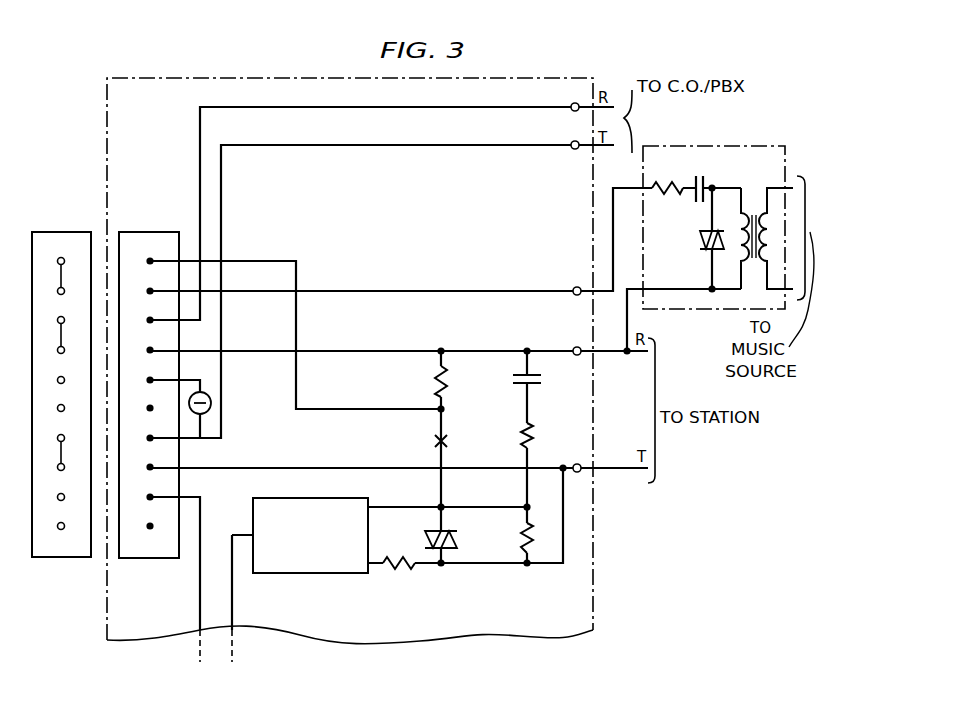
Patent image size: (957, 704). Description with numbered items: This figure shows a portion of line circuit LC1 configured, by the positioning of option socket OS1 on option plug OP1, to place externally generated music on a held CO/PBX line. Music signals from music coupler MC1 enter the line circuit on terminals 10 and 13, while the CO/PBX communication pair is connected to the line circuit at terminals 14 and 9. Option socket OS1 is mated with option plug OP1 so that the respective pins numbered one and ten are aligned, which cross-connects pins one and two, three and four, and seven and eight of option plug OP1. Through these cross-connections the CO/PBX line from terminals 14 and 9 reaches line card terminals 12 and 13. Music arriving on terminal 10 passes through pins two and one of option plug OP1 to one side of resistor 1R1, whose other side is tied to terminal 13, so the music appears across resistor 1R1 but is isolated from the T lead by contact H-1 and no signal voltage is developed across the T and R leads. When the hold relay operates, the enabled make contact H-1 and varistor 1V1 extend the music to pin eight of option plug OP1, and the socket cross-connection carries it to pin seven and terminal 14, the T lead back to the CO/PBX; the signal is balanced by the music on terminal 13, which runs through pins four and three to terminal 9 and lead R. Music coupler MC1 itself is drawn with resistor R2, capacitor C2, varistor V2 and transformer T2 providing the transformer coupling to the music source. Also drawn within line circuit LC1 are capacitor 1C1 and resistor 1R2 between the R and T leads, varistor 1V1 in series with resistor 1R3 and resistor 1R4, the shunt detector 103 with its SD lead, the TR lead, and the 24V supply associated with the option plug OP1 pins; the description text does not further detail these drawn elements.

The shunt detector 103 is at (340, 575).
The terminal 9 is at (573, 98).
The terminal 14 is at (574, 136).
The terminal 10 is at (576, 283).
The terminal 13 is at (574, 341).
The line card terminal 12 is at (574, 458).
The option socket OS1 is at (57, 216).
The option plug OP1 is at (156, 231).
The 24 volt battery 24V is at (199, 415).
The resistor 1R1 is at (431, 380).
The make contact H-1 is at (433, 442).
The capacitor 1C1 is at (545, 380).
The resistor 1R2 is at (539, 433).
The varistor 1V1 is at (426, 535).
The resistor 1R3 is at (520, 535).
The resistor 1R4 is at (414, 568).
The line circuit LC1 is at (452, 613).
The transfer lead TR is at (186, 645).
The shunt detect lead SD is at (248, 645).
The music coupler MC1 is at (718, 209).
The resistor R2 is at (661, 176).
The capacitor C2 is at (712, 177).
The varistor V2 is at (700, 238).
The transformer T2 is at (767, 230).